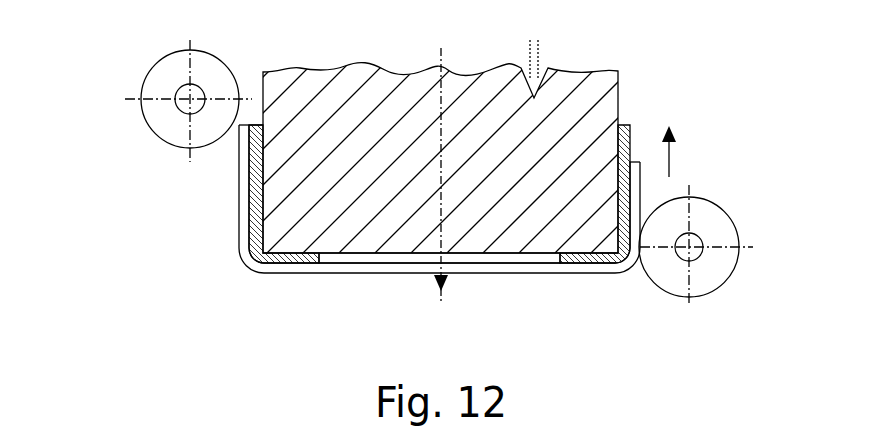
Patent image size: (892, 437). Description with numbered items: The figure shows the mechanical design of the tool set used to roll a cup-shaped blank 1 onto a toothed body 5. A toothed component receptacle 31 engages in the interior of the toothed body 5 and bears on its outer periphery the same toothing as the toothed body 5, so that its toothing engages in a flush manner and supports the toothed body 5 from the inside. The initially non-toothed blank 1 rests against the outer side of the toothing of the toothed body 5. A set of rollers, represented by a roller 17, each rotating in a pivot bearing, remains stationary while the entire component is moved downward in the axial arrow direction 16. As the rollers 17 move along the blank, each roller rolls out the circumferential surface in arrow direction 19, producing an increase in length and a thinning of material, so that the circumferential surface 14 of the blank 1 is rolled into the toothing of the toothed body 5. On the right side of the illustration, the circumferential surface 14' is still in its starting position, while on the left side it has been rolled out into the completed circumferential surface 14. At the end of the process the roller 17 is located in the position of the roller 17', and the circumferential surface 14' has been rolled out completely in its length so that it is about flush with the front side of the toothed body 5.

The toothed component receptacle 31 is at (327, 97).
The circumferential surface 14 is at (300, 199).
The circumferential surface (initial position) 14' is at (605, 204).
The blank 1 is at (337, 280).
The toothed body 5 is at (543, 272).
The arrow direction 16 is at (437, 262).
The roller 17 is at (679, 265).
The roller (final position) 17' is at (158, 101).
The arrow direction 19 is at (672, 159).